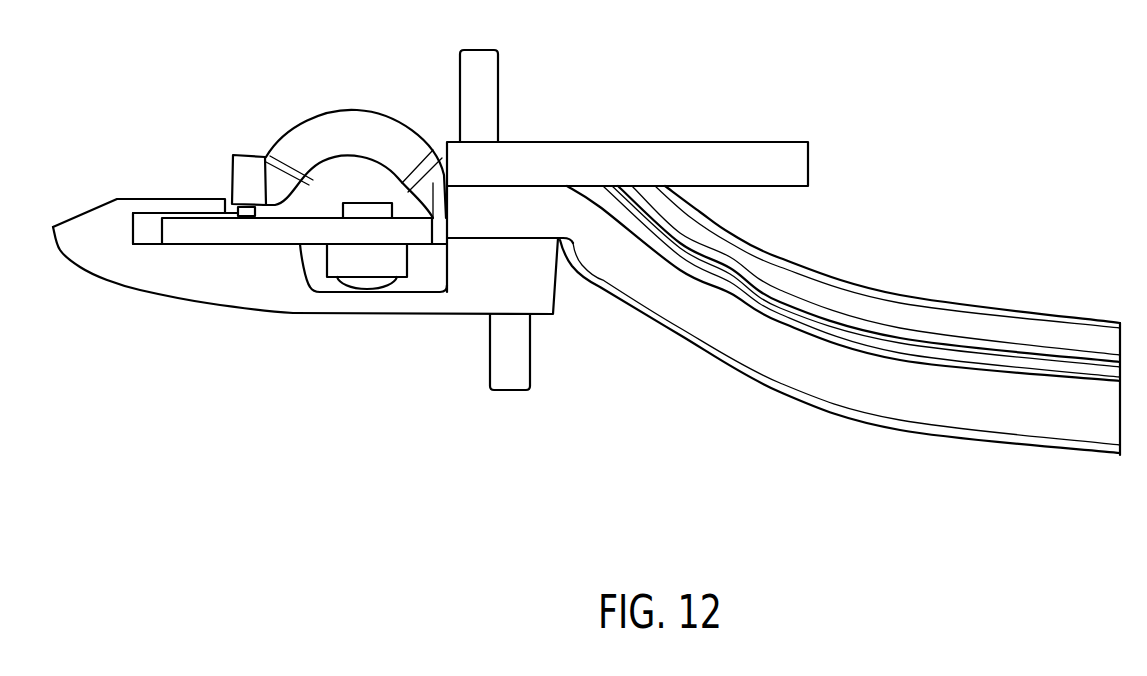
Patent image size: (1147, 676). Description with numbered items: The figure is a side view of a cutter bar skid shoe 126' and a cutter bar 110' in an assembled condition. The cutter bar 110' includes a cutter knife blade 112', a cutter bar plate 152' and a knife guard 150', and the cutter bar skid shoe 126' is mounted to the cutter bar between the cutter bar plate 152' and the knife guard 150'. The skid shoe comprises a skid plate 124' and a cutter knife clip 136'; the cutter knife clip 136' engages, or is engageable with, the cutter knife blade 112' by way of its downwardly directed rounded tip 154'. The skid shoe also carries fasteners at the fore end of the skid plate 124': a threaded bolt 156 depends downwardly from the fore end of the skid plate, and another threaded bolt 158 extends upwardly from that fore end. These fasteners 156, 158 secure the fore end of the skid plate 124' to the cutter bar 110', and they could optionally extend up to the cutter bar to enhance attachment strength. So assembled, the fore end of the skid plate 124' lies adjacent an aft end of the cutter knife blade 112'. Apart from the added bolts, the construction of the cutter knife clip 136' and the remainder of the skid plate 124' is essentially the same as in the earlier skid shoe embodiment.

The cutter bar 110' is at (173, 305).
The cutter knife blade 112' is at (290, 170).
The skid plate 124' is at (840, 378).
The cutter bar skid shoe 126' is at (843, 310).
The cutter knife clip 136' is at (354, 126).
The knife guard 150' is at (415, 322).
The cutter bar plate 152' is at (627, 179).
The downwardly directed rounded tip 154' is at (199, 280).
The threaded bolt 156 is at (490, 362).
The threaded bolt 158 is at (500, 95).